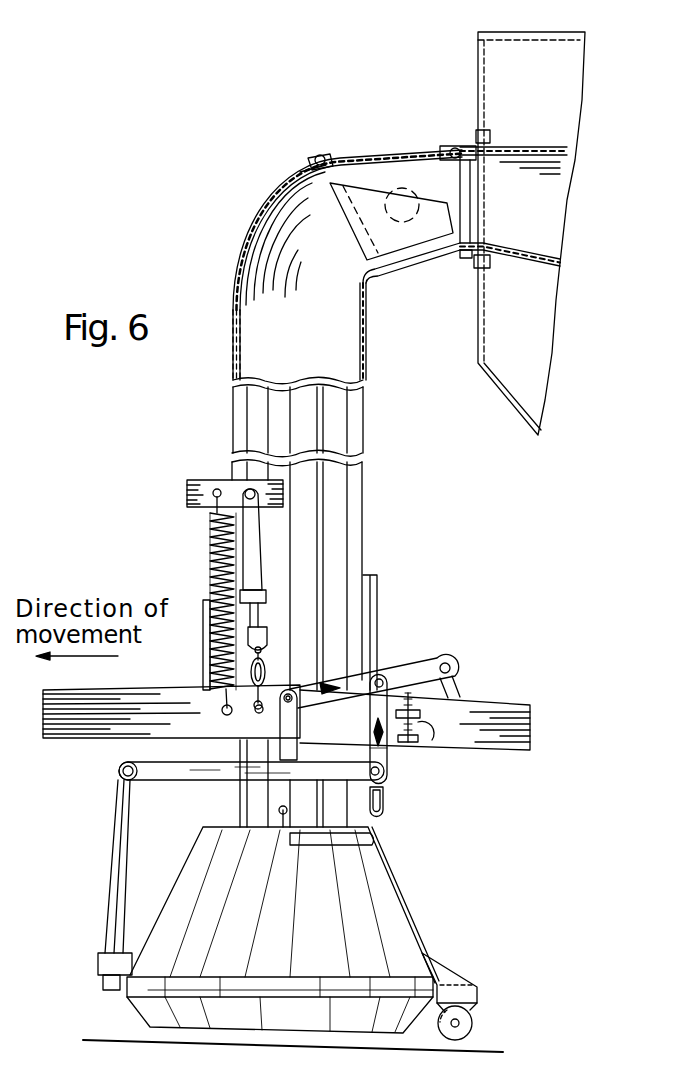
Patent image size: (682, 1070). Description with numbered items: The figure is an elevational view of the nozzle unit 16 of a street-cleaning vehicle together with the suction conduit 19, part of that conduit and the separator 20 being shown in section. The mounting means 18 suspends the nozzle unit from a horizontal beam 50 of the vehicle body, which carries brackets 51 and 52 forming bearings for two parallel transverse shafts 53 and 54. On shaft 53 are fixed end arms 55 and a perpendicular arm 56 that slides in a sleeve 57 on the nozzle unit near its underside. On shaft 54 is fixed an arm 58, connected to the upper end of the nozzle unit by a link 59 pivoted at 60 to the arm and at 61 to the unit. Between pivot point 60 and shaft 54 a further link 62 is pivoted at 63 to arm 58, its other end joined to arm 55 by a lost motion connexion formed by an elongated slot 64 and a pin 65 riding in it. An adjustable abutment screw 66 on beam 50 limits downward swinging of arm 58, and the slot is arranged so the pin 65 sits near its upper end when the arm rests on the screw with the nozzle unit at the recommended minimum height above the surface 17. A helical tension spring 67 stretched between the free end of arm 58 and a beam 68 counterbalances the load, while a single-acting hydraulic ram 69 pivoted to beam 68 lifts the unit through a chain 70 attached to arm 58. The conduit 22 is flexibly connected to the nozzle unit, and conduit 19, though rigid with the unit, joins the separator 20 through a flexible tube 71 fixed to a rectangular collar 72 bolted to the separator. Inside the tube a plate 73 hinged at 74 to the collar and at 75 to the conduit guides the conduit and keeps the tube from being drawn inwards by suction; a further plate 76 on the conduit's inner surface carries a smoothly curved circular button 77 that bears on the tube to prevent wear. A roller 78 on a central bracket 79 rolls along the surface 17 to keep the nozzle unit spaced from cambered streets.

The nozzle unit 16 is at (405, 912).
The surface to be cleaned 17 is at (100, 1040).
The mounting means 18 is at (420, 656).
The suction conduit 19 is at (363, 345).
The separator 20 is at (481, 80).
The conduit 22 is at (378, 590).
The horizontal beam 50 is at (520, 706).
The bracket 51 is at (120, 740).
The bracket 52 is at (460, 695).
The shaft 53 is at (120, 774).
The shaft 54 is at (452, 663).
The arm 55 is at (174, 780).
The arm 56 is at (114, 830).
The sleeve 57 is at (106, 940).
The arm 58 is at (292, 690).
The link 59 is at (325, 718).
The pivot point 60 is at (290, 694).
The pivot point 61 is at (374, 843).
The further link 62 is at (388, 752).
The pivot 63 is at (386, 675).
The elongated slot 64 is at (384, 814).
The pin 65 is at (386, 795).
The adjustable abutment screw 66 is at (426, 744).
The helical tension spring 67 is at (204, 536).
The beam 68 is at (188, 493).
The single-acting hydraulic ram 69 is at (268, 543).
The chain 70 is at (268, 656).
The flexible tube 71 is at (458, 256).
The collar 72 is at (480, 130).
The plate 73 is at (366, 150).
The hinge 74 is at (452, 147).
The hinge 75 is at (317, 159).
The plate 76 is at (405, 238).
The circular button 77 is at (400, 190).
The roller 78 is at (474, 1023).
The bracket 79 is at (444, 970).